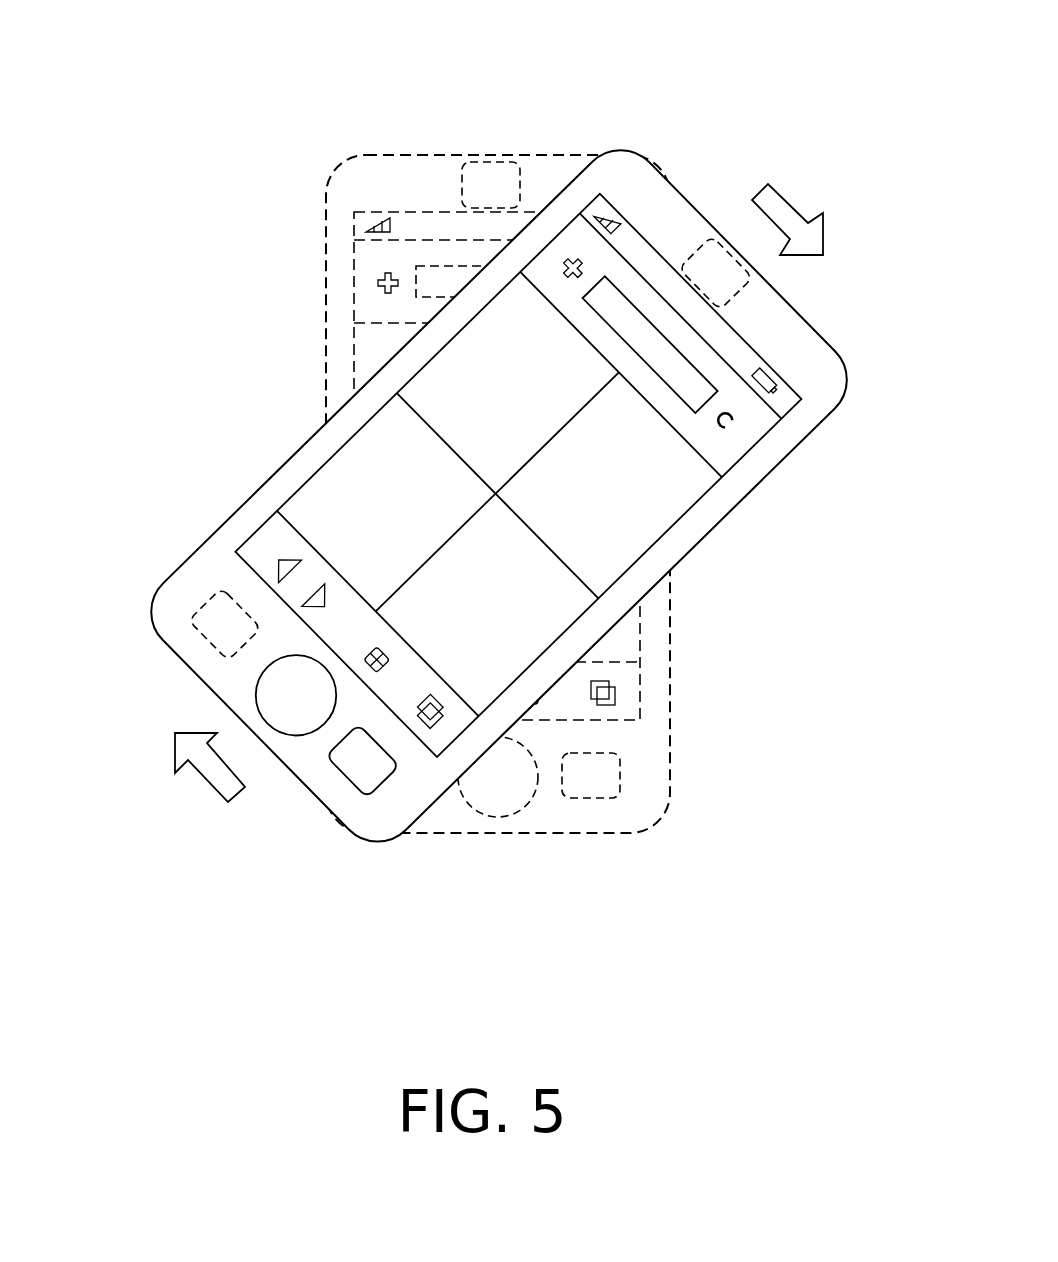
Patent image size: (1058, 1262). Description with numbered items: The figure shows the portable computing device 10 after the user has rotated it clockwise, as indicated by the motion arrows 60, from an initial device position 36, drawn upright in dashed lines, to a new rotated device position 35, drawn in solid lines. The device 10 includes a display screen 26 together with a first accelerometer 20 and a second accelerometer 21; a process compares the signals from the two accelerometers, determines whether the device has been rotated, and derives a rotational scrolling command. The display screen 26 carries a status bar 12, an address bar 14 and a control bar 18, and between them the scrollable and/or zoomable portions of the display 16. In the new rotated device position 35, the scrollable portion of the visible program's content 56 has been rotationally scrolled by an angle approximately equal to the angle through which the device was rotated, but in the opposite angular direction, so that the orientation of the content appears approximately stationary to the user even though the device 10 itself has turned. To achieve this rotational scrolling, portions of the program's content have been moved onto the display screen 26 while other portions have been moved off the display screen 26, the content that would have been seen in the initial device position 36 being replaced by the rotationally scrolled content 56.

The computing device 10 is at (368, 182).
The status bar 12 is at (363, 220).
The address bar 14 is at (375, 257).
The scrollable and/or zoomable portions of the display 16 is at (368, 338).
The control bar 18 is at (248, 550).
The accelerometer 20 is at (218, 618).
The accelerometer 21 is at (483, 177).
The display screen 26 is at (423, 770).
The new rotated device position 35 is at (337, 825).
The initial device position 36 is at (625, 855).
The visible program's content 56 is at (622, 540).
The motion arrows 60 is at (202, 770).